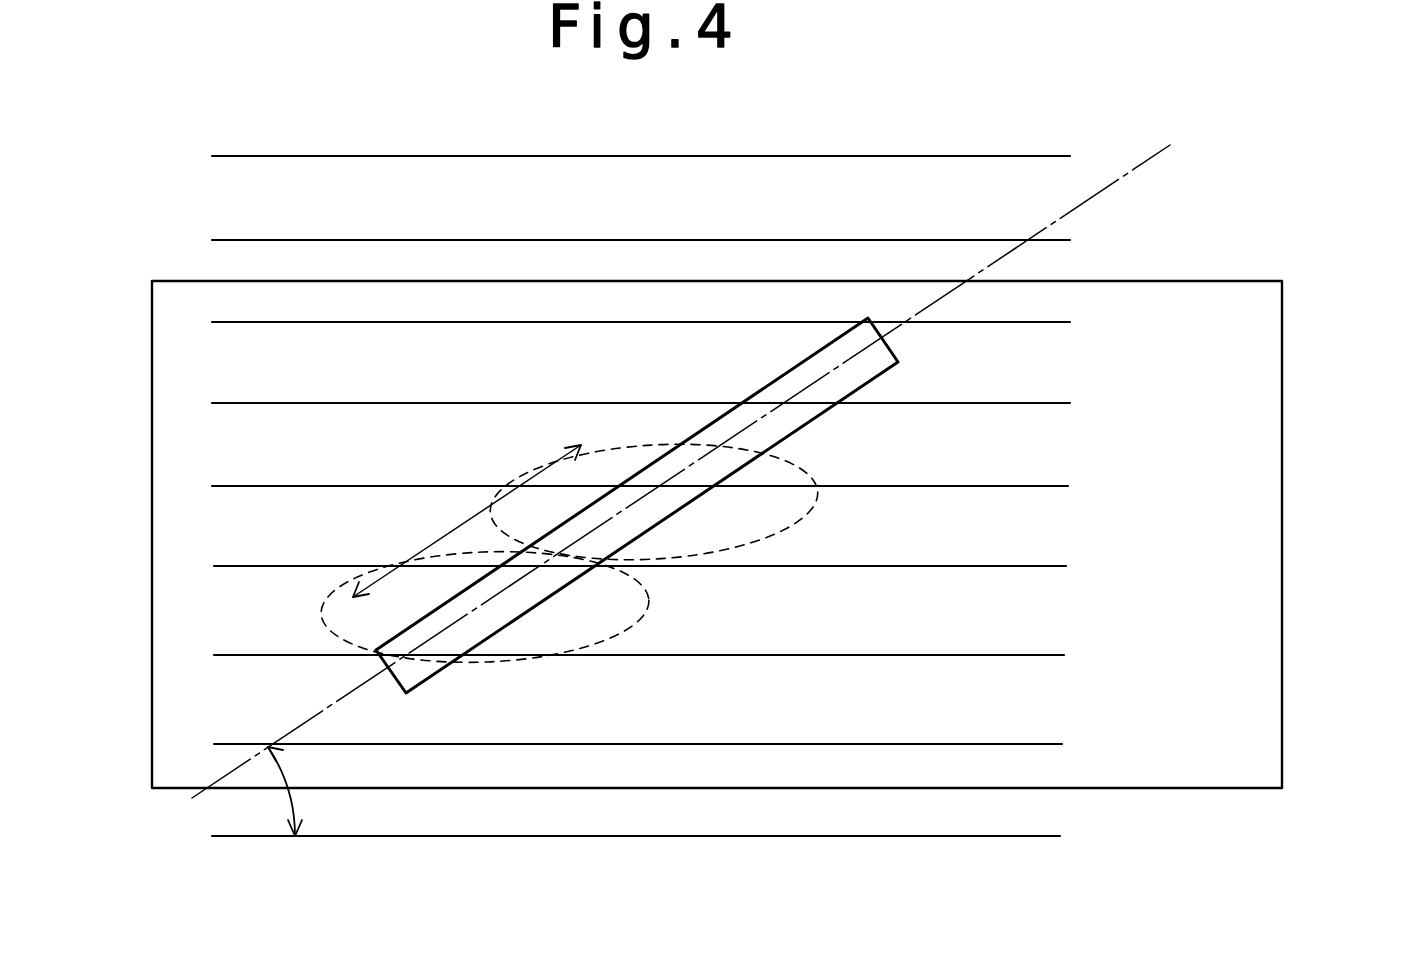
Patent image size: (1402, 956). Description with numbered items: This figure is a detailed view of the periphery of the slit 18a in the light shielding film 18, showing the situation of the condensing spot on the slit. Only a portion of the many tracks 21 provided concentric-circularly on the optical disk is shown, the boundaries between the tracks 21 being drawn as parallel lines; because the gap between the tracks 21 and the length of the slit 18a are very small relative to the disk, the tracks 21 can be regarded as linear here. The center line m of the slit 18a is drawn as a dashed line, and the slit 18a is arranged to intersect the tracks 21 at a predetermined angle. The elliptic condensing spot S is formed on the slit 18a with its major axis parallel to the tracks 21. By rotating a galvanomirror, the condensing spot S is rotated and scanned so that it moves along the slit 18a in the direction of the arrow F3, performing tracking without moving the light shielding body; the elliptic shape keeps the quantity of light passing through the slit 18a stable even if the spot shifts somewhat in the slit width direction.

The tracks 21 is at (370, 433).
The light shielding film 18 is at (1265, 337).
The slit 18a is at (792, 436).
The center line m is at (1115, 182).
The condensing spot S is at (632, 627).
The arrow F3 is at (467, 521).